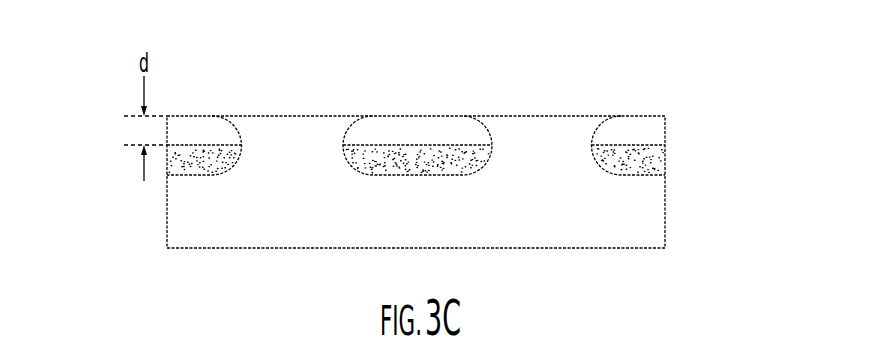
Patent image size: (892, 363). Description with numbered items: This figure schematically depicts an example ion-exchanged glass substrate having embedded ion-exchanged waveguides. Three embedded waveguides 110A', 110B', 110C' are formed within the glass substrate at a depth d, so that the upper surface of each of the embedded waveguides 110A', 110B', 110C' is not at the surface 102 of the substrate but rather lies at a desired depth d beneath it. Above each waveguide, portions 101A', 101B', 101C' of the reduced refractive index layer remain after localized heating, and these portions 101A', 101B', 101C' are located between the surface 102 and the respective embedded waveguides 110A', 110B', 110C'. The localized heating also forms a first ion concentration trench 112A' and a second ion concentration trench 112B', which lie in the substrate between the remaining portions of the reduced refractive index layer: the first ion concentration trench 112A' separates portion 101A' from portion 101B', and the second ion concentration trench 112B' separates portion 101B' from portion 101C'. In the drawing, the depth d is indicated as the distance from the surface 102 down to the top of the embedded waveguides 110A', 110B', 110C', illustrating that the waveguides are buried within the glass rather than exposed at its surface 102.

The surface 102 is at (554, 116).
The portion of the reduced refractive index layer 101A' is at (214, 111).
The portion of the reduced refractive index layer 101B' is at (425, 111).
The portion of the reduced refractive index layer 101C' is at (659, 122).
The embedded waveguide 110A' is at (157, 182).
The embedded waveguide 110B' is at (405, 110).
The embedded waveguide 110C' is at (690, 174).
The first ion concentration trench 112A' is at (294, 72).
The second ion concentration trench 112B' is at (541, 72).